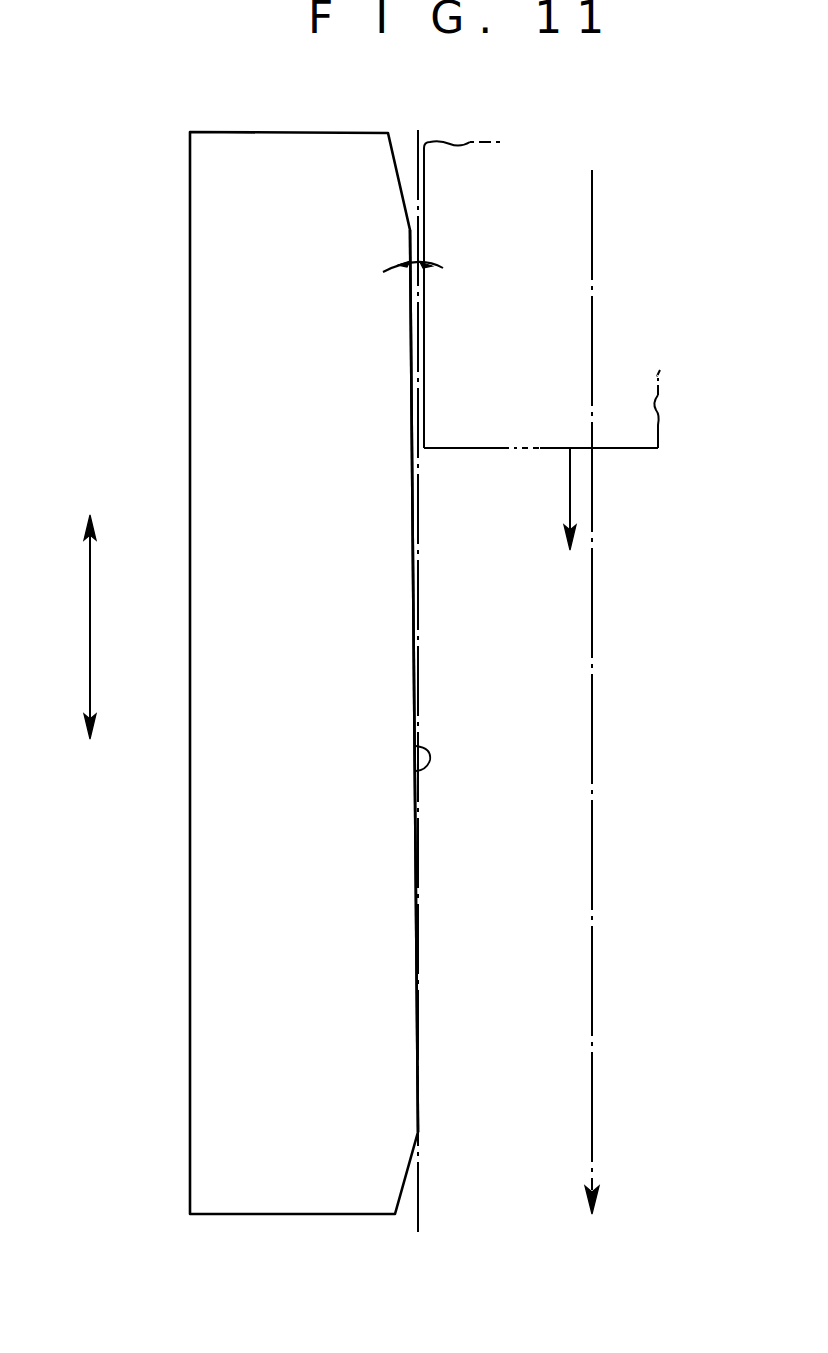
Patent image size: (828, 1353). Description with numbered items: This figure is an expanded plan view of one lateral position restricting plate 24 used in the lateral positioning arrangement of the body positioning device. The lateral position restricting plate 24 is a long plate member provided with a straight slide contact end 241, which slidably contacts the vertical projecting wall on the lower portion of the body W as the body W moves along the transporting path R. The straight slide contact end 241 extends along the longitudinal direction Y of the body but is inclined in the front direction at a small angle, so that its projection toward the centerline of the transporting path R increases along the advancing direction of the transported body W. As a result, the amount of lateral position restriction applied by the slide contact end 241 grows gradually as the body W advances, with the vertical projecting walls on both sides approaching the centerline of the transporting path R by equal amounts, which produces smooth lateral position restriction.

The lateral position restricting plate 24 is at (210, 923).
The straight slide contact end 241 is at (416, 771).
The body W is at (540, 450).
The transporting path R is at (592, 700).
The longitudinal direction Y is at (92, 637).